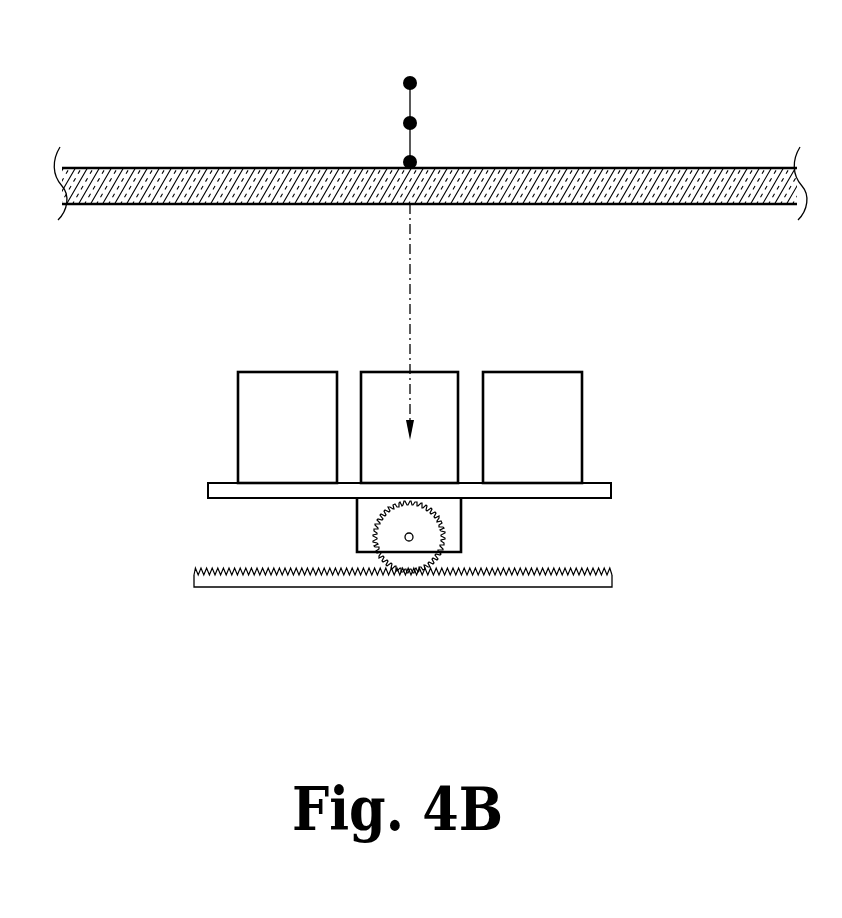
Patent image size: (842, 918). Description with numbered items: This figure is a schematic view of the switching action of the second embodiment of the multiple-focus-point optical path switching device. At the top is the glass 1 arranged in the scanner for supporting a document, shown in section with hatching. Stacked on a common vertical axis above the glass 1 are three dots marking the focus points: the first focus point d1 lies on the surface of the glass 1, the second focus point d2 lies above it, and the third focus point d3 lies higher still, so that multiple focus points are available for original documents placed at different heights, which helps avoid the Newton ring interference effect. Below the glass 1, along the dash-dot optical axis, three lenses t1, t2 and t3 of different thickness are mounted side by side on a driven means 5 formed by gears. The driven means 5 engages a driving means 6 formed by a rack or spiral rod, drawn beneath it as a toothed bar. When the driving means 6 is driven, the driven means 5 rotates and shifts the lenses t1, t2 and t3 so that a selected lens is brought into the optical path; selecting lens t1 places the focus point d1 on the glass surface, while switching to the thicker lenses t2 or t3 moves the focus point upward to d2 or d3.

The glass 1 is at (604, 178).
The first focus point d1 is at (416, 158).
The second focus point d2 is at (404, 120).
The third focus point d3 is at (416, 78).
The lens t1 is at (558, 390).
The lens t2 is at (435, 388).
The lens t3 is at (287, 385).
The driven means 5 is at (423, 547).
The driving means 6 is at (288, 578).